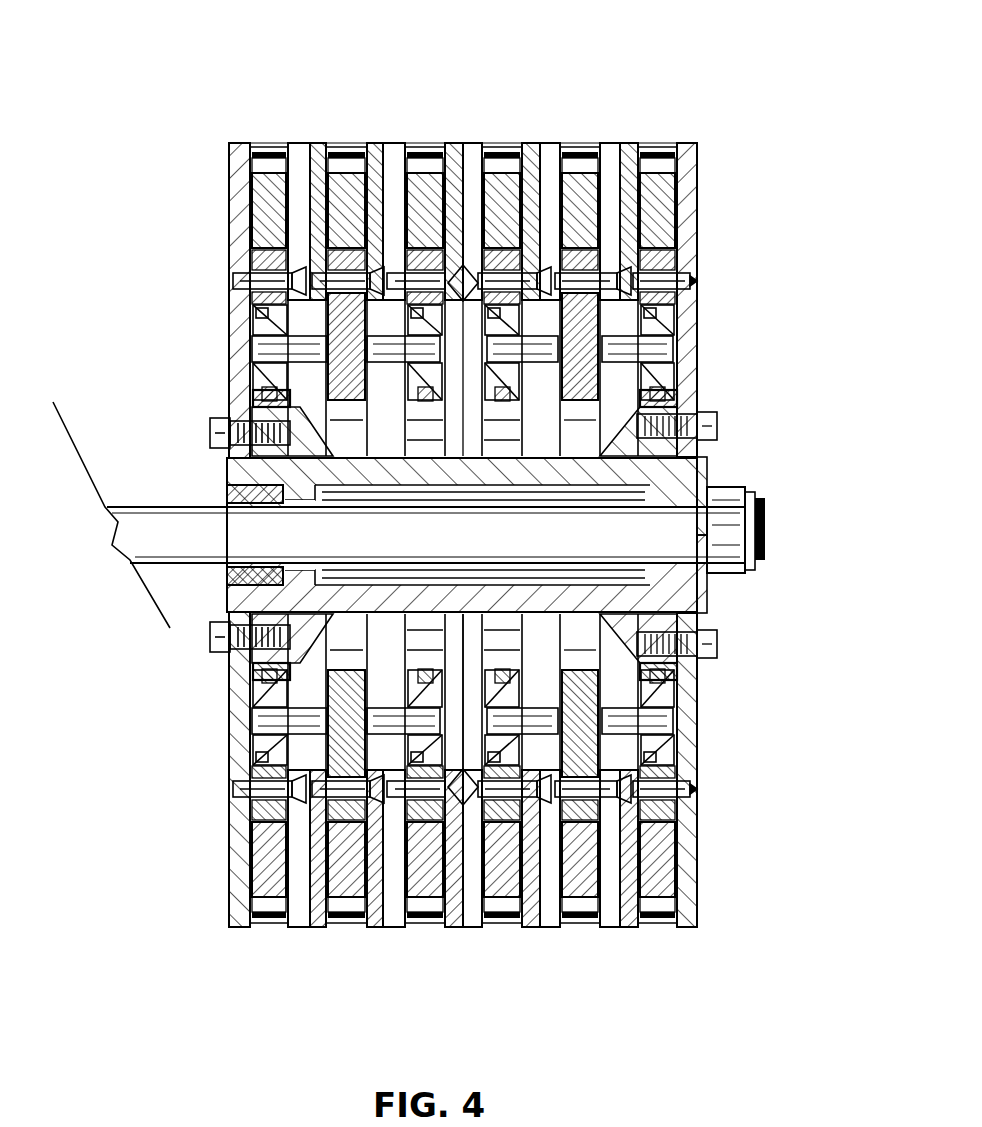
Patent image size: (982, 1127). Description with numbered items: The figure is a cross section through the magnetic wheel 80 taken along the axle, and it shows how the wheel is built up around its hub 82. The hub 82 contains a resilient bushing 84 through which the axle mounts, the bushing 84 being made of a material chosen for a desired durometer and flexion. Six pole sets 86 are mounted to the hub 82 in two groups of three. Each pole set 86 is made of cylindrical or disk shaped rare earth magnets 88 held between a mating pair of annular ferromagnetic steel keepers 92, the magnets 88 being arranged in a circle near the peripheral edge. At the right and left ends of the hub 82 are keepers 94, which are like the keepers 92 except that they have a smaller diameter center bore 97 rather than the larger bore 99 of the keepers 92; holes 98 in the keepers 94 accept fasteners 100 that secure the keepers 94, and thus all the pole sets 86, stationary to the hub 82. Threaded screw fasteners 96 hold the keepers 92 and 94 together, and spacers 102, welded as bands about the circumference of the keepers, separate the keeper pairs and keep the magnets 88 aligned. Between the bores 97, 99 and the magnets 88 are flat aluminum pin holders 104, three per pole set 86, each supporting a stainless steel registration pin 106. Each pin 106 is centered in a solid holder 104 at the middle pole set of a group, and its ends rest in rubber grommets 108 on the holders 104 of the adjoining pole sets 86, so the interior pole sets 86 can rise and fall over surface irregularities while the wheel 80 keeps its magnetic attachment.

The magnetic wheel 80 is at (698, 153).
The hub 82 is at (652, 593).
The resilient bushing 84 is at (240, 573).
The pole set 86 is at (427, 150).
The rare earth magnet 88 is at (585, 222).
The keeper 92 is at (318, 150).
The end keeper 94 is at (229, 198).
The threaded screw fastener 96 is at (697, 282).
The center bore 97 is at (227, 613).
The hole 98 is at (232, 418).
The bore 99 is at (673, 333).
The fastener 100 is at (708, 428).
The spacer 102 is at (425, 918).
The pin holder 104 is at (280, 405).
The registration pin 106 is at (490, 352).
The grommet 108 is at (432, 665).